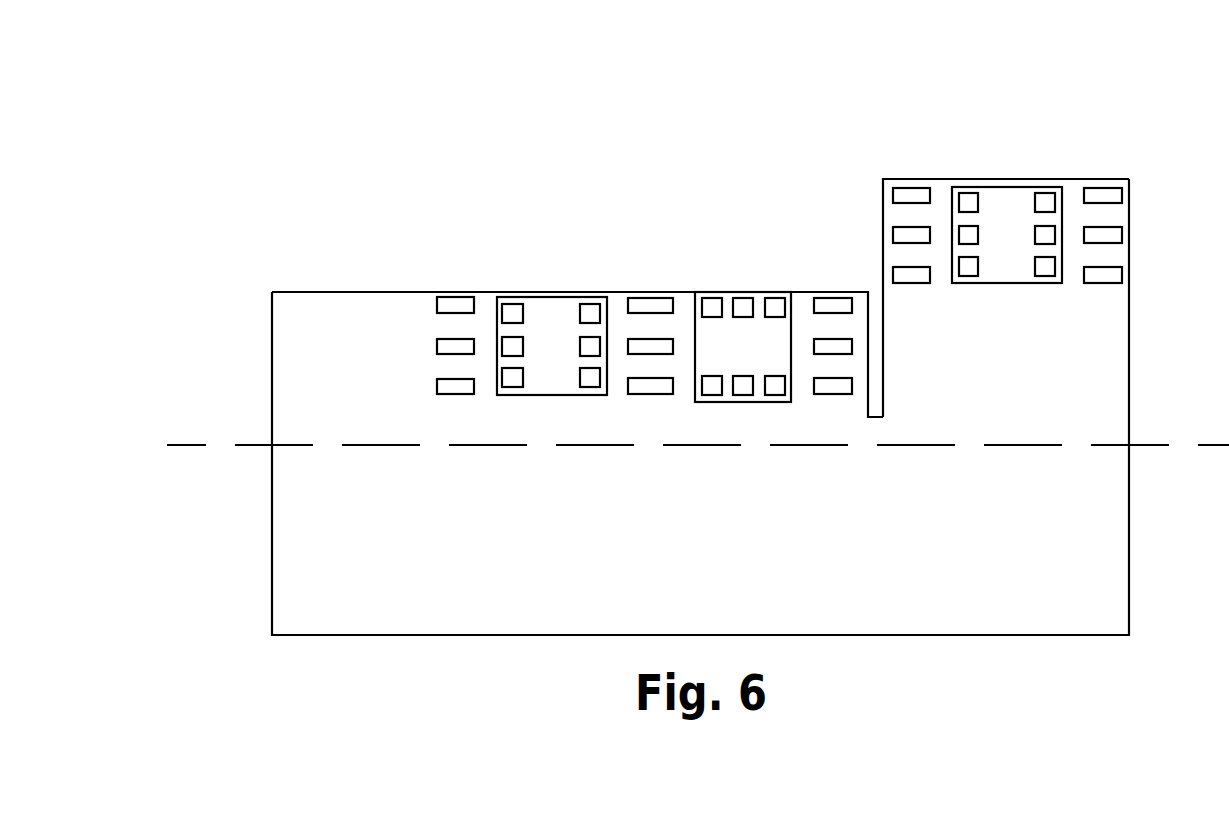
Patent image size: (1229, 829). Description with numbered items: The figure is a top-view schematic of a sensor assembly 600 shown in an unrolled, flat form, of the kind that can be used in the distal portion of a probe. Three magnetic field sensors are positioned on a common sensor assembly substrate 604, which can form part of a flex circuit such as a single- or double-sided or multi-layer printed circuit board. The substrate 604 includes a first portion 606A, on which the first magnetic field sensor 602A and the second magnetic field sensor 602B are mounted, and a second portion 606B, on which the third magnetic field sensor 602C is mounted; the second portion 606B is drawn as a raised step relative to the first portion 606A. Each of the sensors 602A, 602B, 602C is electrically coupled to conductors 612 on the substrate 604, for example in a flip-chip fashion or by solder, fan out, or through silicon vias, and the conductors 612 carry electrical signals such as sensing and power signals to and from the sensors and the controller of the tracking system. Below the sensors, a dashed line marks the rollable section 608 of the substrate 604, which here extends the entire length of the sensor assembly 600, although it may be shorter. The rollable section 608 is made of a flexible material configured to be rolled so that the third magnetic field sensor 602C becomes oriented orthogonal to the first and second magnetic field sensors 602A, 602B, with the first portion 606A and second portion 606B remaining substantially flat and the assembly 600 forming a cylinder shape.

The sensor assembly 600 is at (314, 90).
The sensor assembly substrate 604 is at (285, 326).
The first portion 606A is at (400, 306).
The second portion 606B is at (1117, 213).
The rollable section 608 is at (1116, 544).
The conductors 612 is at (455, 304).
The first magnetic field sensor 602A is at (550, 306).
The second magnetic field sensor 602B is at (725, 306).
The third magnetic field sensor 602C is at (1005, 191).